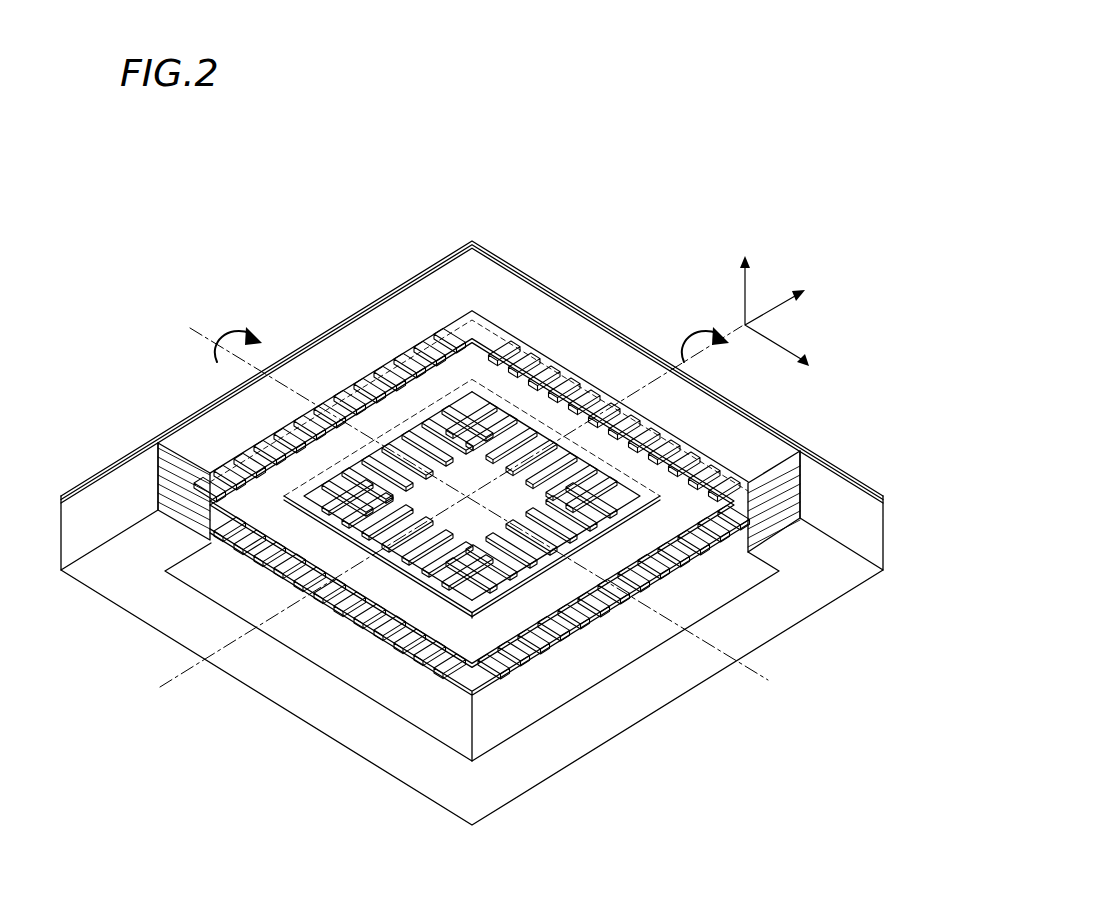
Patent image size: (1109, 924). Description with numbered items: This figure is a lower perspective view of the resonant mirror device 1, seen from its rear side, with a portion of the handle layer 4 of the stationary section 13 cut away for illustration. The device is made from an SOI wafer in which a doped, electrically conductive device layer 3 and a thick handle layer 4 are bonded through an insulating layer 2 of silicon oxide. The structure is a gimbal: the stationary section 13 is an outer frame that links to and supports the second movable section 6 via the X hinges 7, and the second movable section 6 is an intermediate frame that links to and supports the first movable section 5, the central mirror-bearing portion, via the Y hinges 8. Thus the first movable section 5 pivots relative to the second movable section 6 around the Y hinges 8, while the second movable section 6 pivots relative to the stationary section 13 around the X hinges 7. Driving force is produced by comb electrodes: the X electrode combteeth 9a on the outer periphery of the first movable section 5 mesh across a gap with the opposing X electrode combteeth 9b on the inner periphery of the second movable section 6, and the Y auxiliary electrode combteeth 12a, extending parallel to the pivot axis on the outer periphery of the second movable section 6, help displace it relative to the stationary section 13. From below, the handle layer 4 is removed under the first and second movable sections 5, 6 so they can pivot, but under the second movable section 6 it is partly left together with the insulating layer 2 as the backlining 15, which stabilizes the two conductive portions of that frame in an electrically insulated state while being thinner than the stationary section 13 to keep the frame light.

The resonant mirror device 1 is at (427, 243).
The insulating layer 2 is at (883, 497).
The device layer 3 is at (884, 490).
The handle layer 4 is at (883, 532).
The first movable section 5 is at (398, 573).
The second movable section 6 is at (433, 663).
The X hinges 7 is at (610, 436).
The Y hinges 8 is at (393, 450).
The X electrode combteeth 9a is at (370, 512).
The X electrode combteeth 9b is at (570, 460).
The Y auxiliary electrode combteeth 12a is at (531, 350).
The stationary section 13 is at (690, 655).
The backlining 15 is at (497, 628).